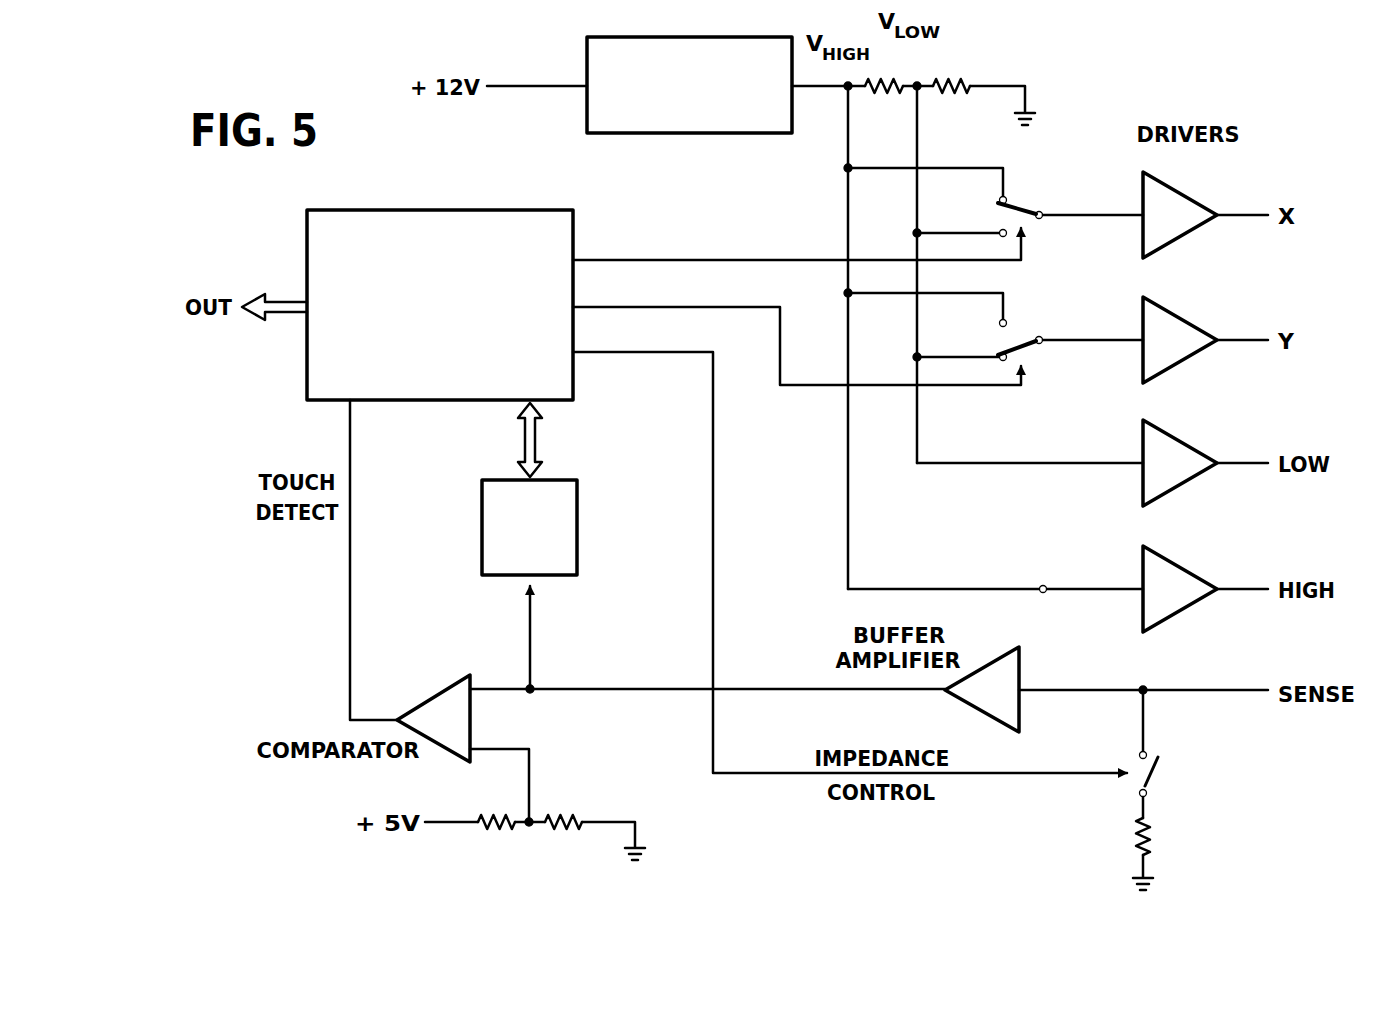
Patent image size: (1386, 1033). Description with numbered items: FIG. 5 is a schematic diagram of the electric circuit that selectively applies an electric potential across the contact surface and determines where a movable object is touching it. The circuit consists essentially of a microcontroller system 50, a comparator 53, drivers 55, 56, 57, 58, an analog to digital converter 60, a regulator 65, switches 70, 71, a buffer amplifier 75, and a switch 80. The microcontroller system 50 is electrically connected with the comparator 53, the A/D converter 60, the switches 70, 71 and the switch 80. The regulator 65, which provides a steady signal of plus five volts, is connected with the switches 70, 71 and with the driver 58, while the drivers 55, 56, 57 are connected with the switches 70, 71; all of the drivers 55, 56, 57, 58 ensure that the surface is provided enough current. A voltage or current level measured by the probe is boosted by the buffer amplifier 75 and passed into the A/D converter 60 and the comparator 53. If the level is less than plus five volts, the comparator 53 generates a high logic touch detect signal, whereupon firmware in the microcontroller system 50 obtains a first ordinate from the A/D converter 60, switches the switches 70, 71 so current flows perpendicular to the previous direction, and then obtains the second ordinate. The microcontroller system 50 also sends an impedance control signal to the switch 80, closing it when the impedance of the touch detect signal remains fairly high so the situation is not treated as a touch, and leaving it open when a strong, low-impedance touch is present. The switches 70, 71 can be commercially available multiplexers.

The microcontroller system 50 is at (458, 210).
The comparator 53 is at (423, 700).
The driver 55 is at (1180, 190).
The driver 56 is at (1180, 315).
The driver 57 is at (1180, 435).
The driver 58 is at (1180, 562).
The analog to digital (A/D) converter 60 is at (577, 533).
The regulator 65 is at (712, 133).
The switch 70 is at (1015, 205).
The switch 71 is at (1015, 338).
The buffer amplifier 75 is at (1022, 677).
The switch 80 is at (1158, 772).